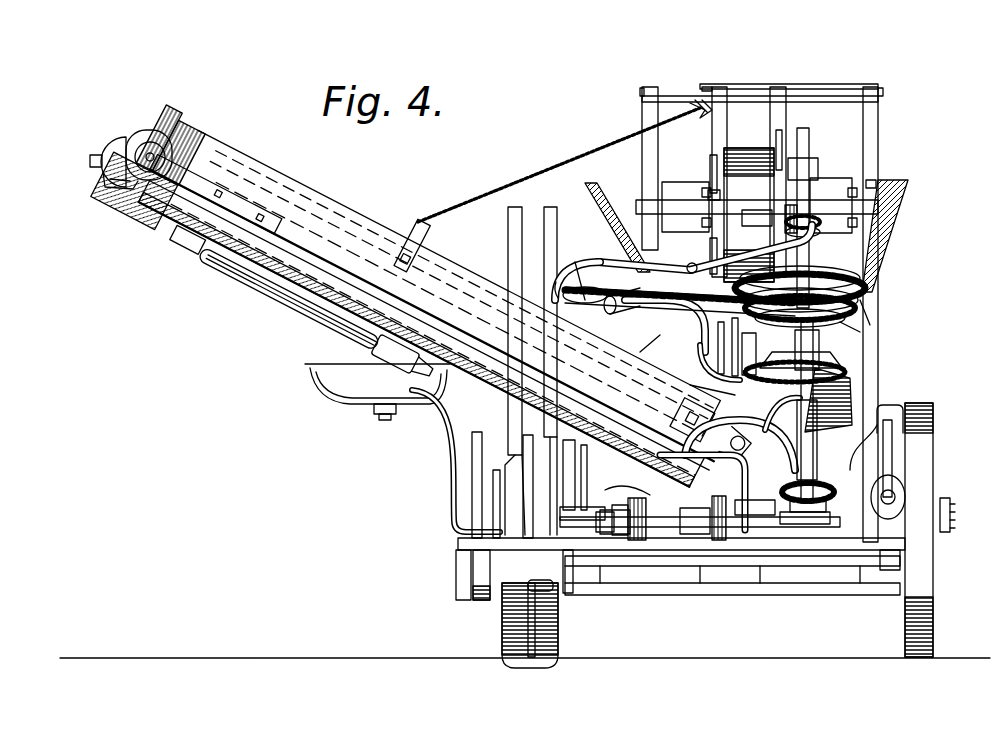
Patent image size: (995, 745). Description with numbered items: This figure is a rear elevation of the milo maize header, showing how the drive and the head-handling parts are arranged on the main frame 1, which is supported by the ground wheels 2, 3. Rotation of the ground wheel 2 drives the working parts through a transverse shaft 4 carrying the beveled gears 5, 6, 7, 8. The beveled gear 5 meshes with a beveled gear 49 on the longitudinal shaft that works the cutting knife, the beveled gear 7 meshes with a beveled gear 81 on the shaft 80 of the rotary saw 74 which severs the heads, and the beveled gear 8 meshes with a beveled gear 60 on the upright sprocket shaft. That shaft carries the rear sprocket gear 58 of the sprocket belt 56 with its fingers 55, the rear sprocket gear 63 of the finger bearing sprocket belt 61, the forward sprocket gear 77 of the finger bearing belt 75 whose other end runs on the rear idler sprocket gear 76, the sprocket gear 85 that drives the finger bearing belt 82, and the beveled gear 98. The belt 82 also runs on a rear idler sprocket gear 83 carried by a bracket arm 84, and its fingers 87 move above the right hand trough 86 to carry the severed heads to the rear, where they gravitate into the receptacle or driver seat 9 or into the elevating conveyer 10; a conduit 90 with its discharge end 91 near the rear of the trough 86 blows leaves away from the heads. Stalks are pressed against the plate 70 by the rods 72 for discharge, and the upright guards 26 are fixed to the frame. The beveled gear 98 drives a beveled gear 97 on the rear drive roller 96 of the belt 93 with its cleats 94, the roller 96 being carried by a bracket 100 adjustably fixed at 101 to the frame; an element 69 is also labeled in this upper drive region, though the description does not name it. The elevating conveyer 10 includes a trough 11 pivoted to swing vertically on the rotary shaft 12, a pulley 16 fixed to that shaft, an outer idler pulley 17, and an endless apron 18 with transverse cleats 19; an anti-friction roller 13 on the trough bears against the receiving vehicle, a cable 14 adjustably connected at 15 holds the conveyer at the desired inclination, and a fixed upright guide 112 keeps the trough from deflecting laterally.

The main frame 1 is at (515, 548).
The ground wheel 2 is at (505, 608).
The ground wheel 3 is at (922, 582).
The transverse shaft 4 is at (752, 540).
The beveled gear 5 is at (630, 530).
The beveled gear 6 is at (640, 540).
The beveled gear 7 is at (718, 540).
The beveled gear 8 is at (812, 540).
The driver seat 9 is at (340, 388).
The elevating conveyer 10 is at (269, 162).
The trough 11 is at (352, 207).
The rotary shaft 12 is at (690, 388).
The anti-friction roller 13 is at (272, 297).
The cable 14 is at (480, 215).
The adjustable connection 15 is at (712, 104).
The pulley 16 is at (690, 418).
The outer idler pulley 17 is at (150, 146).
The endless apron 18 is at (196, 132).
The transverse cleats 19 is at (160, 128).
The upright guards 26 is at (592, 200).
The beveled gear 49 is at (605, 512).
The fingers 55 is at (855, 300).
The sprocket belt 56 is at (860, 282).
The rear sprocket gear 58 is at (855, 265).
The beveled gear 60 is at (830, 490).
The finger bearing sprocket belt 61 is at (852, 400).
The rear sprocket gear 63 is at (860, 380).
The vertical shaft 69 is at (808, 158).
The plate 70 is at (718, 347).
The rods 72 is at (822, 266).
The rotary saw 74 is at (676, 266).
The finger bearing belt 75 is at (862, 328).
The rear idler sprocket gear 76 is at (900, 318).
The forward sprocket gear 77 is at (862, 345).
The shaft 80 is at (701, 362).
The beveled gear 81 is at (755, 508).
The finger bearing belt 82 is at (626, 262).
The rear idler sprocket gear 83 is at (585, 282).
The bracket arm 84 is at (622, 250).
The sprocket gear 85 is at (845, 312).
The right hand trough 86 is at (630, 335).
The fingers 87 is at (665, 318).
The conduit 90 is at (640, 355).
The discharge end 91 is at (607, 304).
The belt 93 is at (742, 185).
The cleats 94 is at (782, 150).
The rear drive roller 96 is at (710, 190).
The beveled gear 97 is at (810, 195).
The beveled gear 98 is at (812, 214).
The bracket 100 is at (690, 212).
The adjustable fixing 101 is at (765, 230).
The fixed upright guide 112 is at (550, 218).